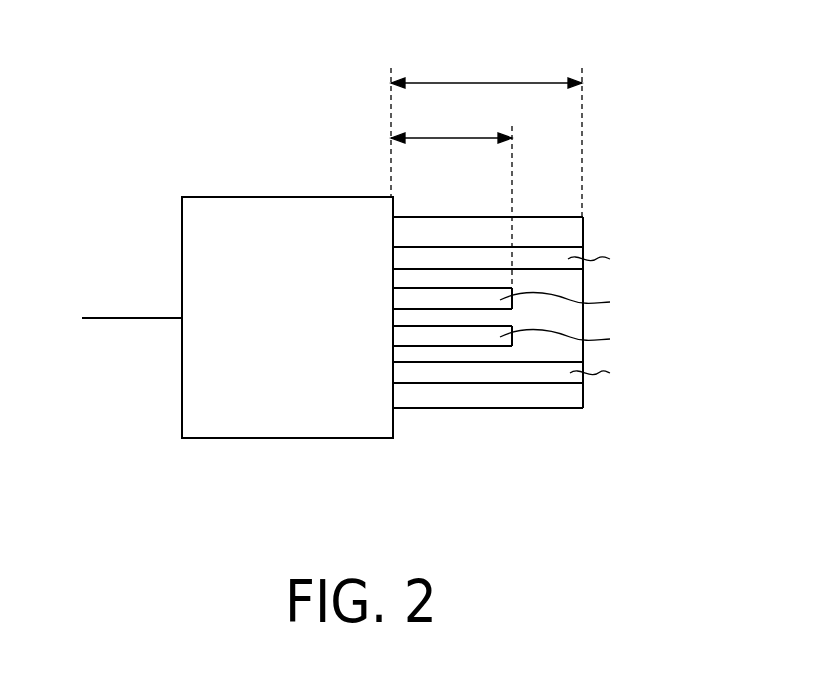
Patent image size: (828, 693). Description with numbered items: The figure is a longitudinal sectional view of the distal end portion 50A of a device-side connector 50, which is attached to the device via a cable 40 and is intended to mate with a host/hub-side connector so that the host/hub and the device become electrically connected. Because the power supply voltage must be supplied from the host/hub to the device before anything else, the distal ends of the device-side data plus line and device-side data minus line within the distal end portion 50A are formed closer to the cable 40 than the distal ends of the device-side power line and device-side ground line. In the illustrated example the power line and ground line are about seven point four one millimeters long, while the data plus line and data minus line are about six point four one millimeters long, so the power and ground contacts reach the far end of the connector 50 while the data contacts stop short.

The cable 40 is at (124, 317).
The device-side connector 50 is at (293, 196).
The distal end portion 50A is at (551, 217).